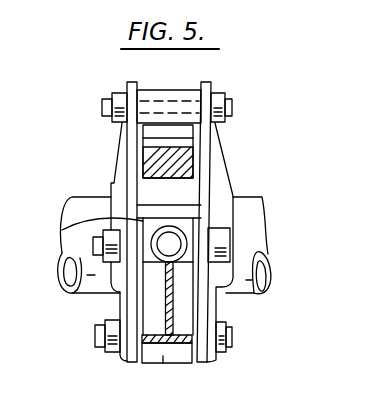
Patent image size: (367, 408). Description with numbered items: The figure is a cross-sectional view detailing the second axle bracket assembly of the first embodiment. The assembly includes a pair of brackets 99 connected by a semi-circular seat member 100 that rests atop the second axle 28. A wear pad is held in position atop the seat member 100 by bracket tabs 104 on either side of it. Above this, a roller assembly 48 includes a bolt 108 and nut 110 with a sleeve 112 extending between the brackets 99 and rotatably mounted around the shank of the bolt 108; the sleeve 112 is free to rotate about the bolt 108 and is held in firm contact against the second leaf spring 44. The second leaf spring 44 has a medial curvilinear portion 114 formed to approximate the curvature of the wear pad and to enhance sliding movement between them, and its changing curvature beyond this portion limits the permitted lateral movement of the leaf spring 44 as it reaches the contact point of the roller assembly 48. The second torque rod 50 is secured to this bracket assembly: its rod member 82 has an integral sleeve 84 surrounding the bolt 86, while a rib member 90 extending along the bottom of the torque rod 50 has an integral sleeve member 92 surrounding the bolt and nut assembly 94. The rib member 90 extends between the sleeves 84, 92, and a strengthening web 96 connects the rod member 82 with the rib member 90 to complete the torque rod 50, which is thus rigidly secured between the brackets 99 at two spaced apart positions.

The sleeve 112 is at (186, 77).
The roller assembly 48 is at (236, 86).
The nut 110 is at (113, 92).
The bolt 108 is at (233, 101).
The medial curvilinear portion 114 is at (157, 135).
The brackets 99 is at (130, 164).
The second leaf spring 44 is at (192, 160).
The bracket tabs 104 is at (190, 223).
The semi-circular seat member 100 is at (222, 215).
The second axle 28 is at (256, 246).
The integral sleeve 84 is at (65, 224).
The bolt 86 is at (95, 243).
The rod member 82 is at (162, 262).
The bolt and nut assembly 94 is at (176, 300).
The strengthening web 96 is at (98, 345).
The second torque rod 50 is at (143, 369).
The rib member 90 is at (156, 364).
The integral sleeve member 92 is at (193, 333).